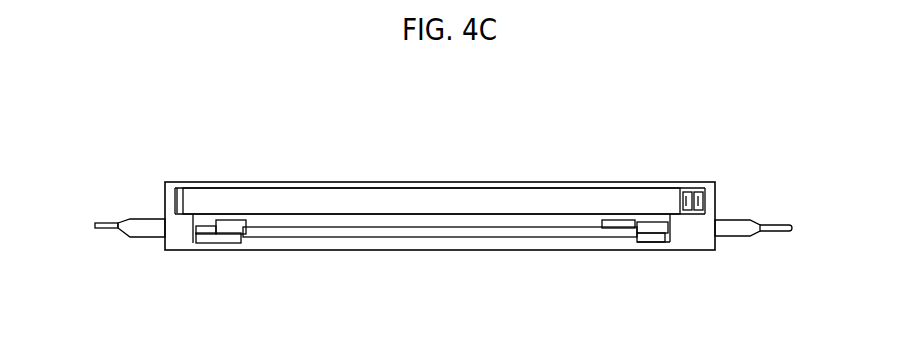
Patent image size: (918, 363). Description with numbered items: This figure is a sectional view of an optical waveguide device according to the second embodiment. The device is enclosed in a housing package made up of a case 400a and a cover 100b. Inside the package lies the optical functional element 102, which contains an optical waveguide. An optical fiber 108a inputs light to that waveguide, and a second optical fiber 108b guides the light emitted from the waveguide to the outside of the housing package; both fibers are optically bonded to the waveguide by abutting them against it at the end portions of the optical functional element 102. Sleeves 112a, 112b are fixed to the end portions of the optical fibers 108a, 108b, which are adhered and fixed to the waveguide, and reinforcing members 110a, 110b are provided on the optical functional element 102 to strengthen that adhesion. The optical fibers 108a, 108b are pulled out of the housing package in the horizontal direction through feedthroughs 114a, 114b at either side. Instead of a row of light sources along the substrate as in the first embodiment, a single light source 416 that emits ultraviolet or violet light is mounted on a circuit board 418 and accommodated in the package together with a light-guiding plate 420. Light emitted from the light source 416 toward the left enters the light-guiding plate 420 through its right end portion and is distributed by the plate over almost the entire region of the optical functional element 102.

The cover 100b is at (166, 181).
The case 400a is at (423, 244).
The light-guiding plate 420 is at (461, 197).
The optical functional element 102 is at (505, 238).
The optical fiber 108a is at (102, 228).
The optical fiber 108b is at (790, 224).
The reinforcing member 110a is at (265, 236).
The reinforcing member 110b is at (615, 232).
The sleeve 112a is at (228, 243).
The sleeve 112b is at (648, 242).
The feedthrough 114a is at (142, 222).
The feedthrough 114b is at (743, 227).
The light source 416 is at (685, 190).
The circuit board 418 is at (697, 190).